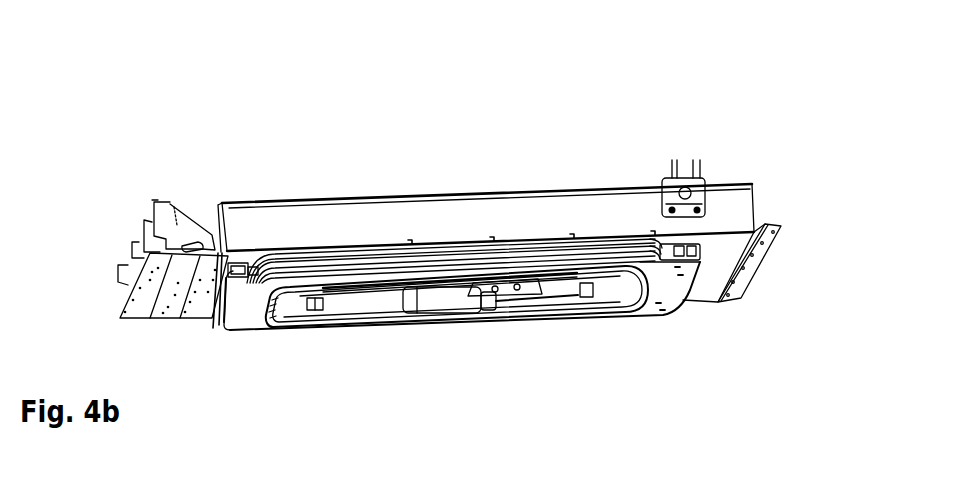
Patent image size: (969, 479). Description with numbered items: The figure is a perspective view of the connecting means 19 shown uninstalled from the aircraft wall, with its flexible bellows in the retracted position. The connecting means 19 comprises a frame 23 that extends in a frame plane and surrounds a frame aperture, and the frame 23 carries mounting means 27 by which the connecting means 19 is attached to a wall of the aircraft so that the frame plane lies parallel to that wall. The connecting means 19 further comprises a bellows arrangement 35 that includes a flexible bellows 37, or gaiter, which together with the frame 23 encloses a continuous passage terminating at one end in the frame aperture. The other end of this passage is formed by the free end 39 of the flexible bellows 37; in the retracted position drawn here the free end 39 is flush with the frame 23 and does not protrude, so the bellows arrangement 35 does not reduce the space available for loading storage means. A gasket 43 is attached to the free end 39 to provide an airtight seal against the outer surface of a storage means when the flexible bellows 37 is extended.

The connecting means 19 is at (641, 171).
The frame 23 is at (357, 226).
The mounting means 27 is at (167, 198).
The bellows arrangement 35 is at (655, 292).
The flexible bellows 37 is at (500, 240).
The free end 39 is at (228, 318).
The gasket 43 is at (345, 333).